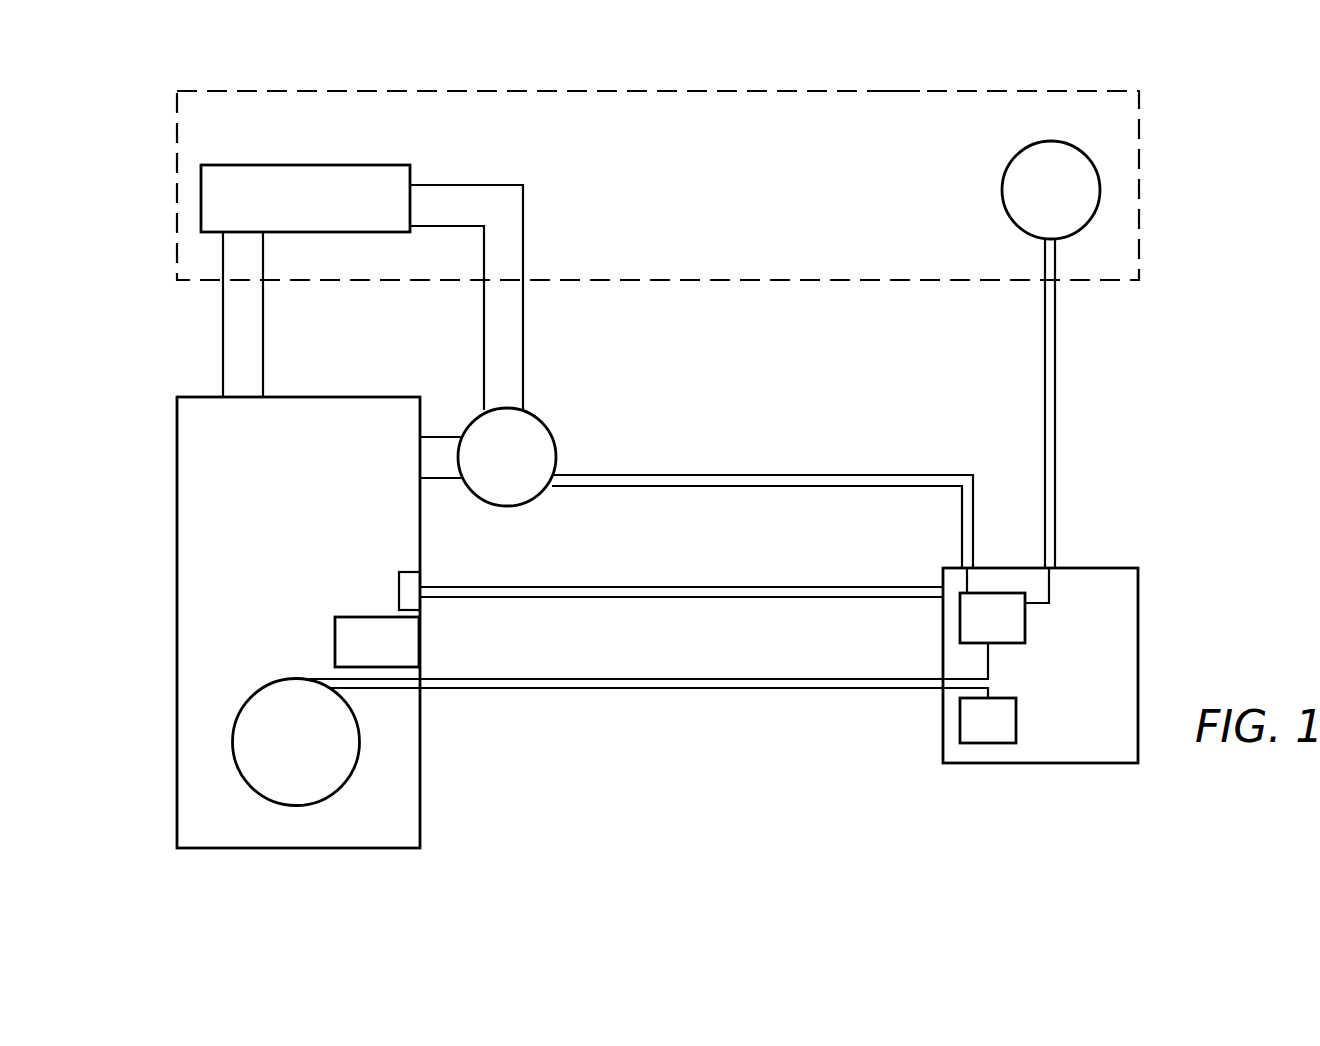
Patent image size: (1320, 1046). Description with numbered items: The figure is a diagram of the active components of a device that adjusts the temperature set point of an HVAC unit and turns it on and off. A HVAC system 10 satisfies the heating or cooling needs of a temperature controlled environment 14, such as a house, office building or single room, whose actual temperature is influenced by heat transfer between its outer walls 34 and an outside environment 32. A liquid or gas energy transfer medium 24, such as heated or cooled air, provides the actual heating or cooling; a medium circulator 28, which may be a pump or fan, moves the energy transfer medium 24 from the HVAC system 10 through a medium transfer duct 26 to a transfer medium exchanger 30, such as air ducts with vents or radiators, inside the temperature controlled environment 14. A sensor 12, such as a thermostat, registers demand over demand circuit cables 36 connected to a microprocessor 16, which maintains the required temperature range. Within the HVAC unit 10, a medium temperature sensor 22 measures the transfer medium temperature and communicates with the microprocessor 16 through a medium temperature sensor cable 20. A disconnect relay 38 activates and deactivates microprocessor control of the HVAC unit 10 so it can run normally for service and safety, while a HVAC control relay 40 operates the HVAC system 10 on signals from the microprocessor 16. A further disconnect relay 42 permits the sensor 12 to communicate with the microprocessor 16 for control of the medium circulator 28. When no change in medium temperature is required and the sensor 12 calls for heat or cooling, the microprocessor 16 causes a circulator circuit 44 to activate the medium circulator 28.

The HVAC system 10 is at (338, 461).
The sensor 12 is at (1037, 203).
The temperature controlled environment 14 is at (668, 183).
The microprocessor 16 is at (1096, 666).
The medium temperature sensor cable 20 is at (604, 598).
The medium temperature sensor 22 is at (398, 590).
The energy transfer medium 24 is at (252, 346).
The medium transfer duct 26 is at (222, 382).
The medium circulator 28 is at (493, 470).
The transfer medium exchanger 30 is at (317, 205).
The outside environment 32 is at (596, 72).
The outer walls 34 is at (902, 90).
The demand circuit cables 36 is at (1057, 432).
The disconnect relay 38 is at (349, 661).
The HVAC control relay 40 is at (972, 733).
The disconnect relay 42 is at (978, 631).
The circulator circuit 44 is at (722, 474).